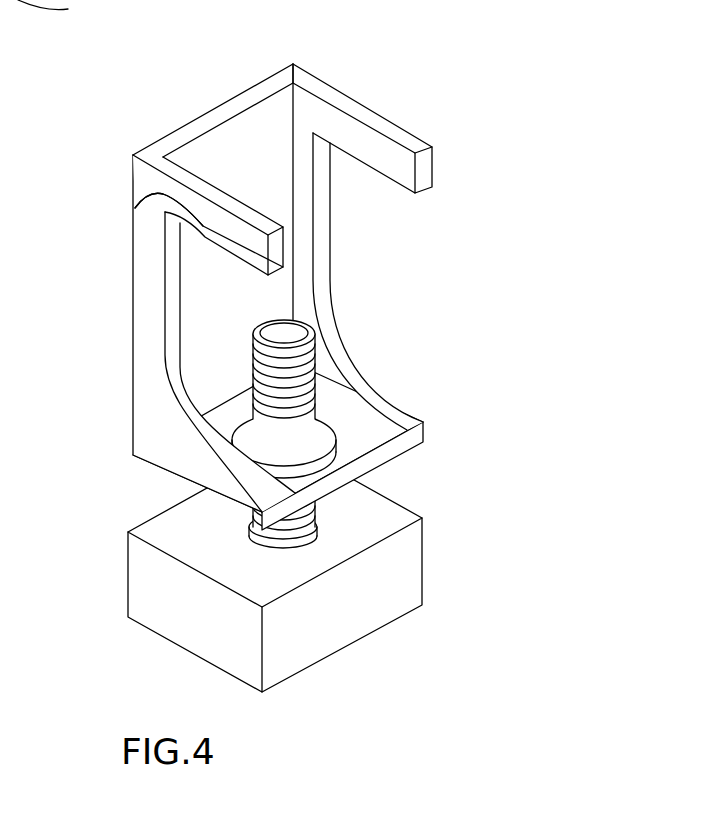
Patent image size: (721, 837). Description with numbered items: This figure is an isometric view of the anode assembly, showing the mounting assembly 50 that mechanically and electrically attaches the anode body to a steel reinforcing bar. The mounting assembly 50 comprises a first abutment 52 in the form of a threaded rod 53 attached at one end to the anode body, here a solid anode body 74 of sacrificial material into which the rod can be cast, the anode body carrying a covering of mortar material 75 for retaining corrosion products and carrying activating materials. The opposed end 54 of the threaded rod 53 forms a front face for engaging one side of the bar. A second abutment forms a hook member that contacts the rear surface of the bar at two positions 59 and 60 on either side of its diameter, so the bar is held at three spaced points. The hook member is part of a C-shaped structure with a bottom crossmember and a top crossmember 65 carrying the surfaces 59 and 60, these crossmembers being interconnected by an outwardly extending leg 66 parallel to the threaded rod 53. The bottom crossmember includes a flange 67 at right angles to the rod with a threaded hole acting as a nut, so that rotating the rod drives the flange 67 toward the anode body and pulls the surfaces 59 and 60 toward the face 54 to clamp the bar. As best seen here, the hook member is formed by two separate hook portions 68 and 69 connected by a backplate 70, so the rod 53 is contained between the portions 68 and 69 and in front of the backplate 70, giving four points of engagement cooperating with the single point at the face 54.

The mounting assembly 50 is at (293, 268).
The first abutment 52 is at (313, 518).
The threaded rod 53 is at (300, 408).
The opposed end 54 is at (293, 333).
The contact position 59 is at (138, 205).
The contact position 60 is at (252, 263).
The top crossmember 65 is at (336, 126).
The leg 66 is at (147, 343).
The flange 67 is at (357, 434).
The hook portion 68 is at (247, 170).
The hook portion 69 is at (403, 160).
The backplate 70 is at (237, 321).
The solid anode body 74 is at (395, 575).
The mortar material 75 is at (60, 12).